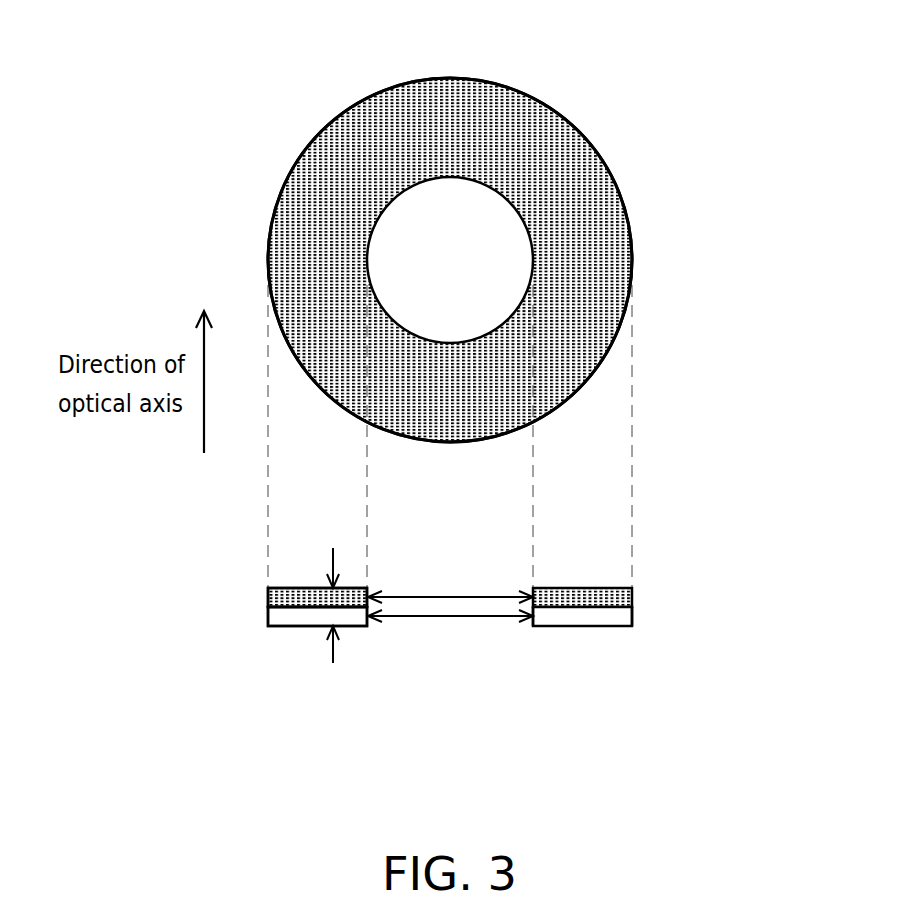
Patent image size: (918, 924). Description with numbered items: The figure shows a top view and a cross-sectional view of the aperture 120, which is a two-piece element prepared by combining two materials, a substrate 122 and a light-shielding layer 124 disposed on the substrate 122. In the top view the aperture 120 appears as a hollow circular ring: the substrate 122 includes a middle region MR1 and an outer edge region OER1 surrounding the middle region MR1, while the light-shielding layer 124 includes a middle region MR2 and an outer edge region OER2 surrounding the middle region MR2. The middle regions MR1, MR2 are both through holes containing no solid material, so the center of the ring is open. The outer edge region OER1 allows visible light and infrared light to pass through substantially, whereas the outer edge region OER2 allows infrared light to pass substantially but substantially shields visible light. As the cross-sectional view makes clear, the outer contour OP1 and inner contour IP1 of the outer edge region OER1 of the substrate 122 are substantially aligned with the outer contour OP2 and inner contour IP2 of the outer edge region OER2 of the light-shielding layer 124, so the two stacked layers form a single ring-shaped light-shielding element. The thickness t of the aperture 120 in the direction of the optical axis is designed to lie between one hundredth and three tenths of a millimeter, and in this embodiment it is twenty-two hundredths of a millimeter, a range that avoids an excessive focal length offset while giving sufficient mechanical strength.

The aperture 120 is at (752, 772).
The substrate 122 is at (138, 625).
The light-shielding layer 124 is at (138, 710).
The outer edge region of the light-shielding layer OER2 is at (352, 130).
The outer edge region of the substrate OER1 is at (617, 618).
The middle region of the light-shielding layer MR2 is at (524, 52).
The middle region of the substrate MR1 is at (450, 631).
The outer contour of the light-shielding layer outer edge region OP2 is at (589, 140).
The outer contour of the substrate outer edge region OP1 is at (633, 617).
The inner contour of the light-shielding layer outer edge region IP2 is at (520, 216).
The inner contour of the substrate outer edge region IP1 is at (532, 624).
The thickness t is at (338, 611).